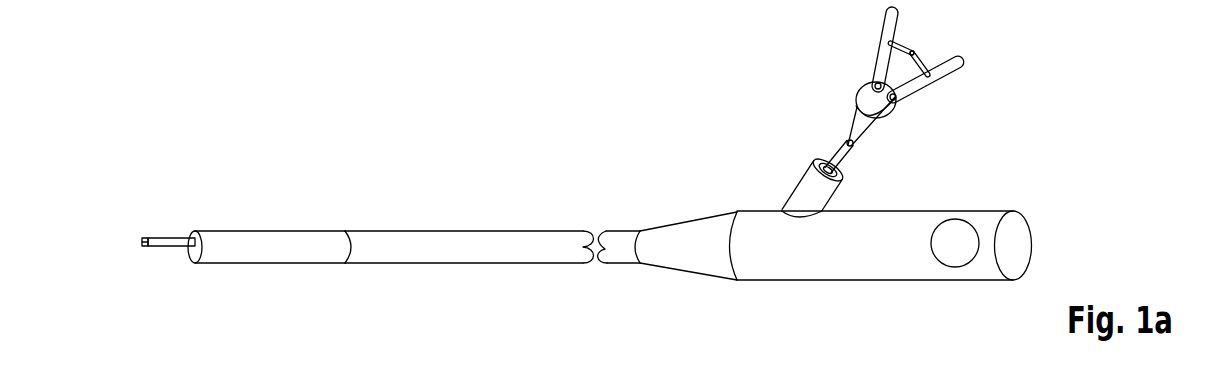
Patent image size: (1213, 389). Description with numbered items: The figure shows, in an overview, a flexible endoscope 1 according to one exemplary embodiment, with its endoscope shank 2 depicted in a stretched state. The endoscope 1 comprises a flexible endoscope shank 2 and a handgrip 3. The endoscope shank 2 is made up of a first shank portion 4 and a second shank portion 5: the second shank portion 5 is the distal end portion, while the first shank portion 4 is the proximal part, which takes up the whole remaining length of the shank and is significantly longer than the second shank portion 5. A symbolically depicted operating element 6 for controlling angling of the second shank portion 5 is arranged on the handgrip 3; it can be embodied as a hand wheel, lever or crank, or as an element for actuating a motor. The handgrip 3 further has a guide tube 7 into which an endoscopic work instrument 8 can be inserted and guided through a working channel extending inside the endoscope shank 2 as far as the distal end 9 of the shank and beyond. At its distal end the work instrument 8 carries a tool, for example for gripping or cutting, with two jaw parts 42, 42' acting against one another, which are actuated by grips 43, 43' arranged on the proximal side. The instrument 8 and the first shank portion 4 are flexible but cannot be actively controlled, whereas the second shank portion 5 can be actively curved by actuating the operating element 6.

The flexible endoscope 1 is at (556, 78).
The endoscope shank 2 is at (370, 297).
The handgrip 3 is at (793, 295).
The first shank portion 4 is at (453, 256).
The second shank portion 5 is at (280, 256).
The operating element 6 is at (954, 252).
The guide tube 7 is at (798, 200).
The endoscopic work instrument 8 is at (149, 209).
The distal end 9 is at (174, 300).
The jaw part 42 is at (116, 279).
The jaw part 42' is at (114, 202).
The grip 43 is at (935, 94).
The grip 43' is at (849, 49).